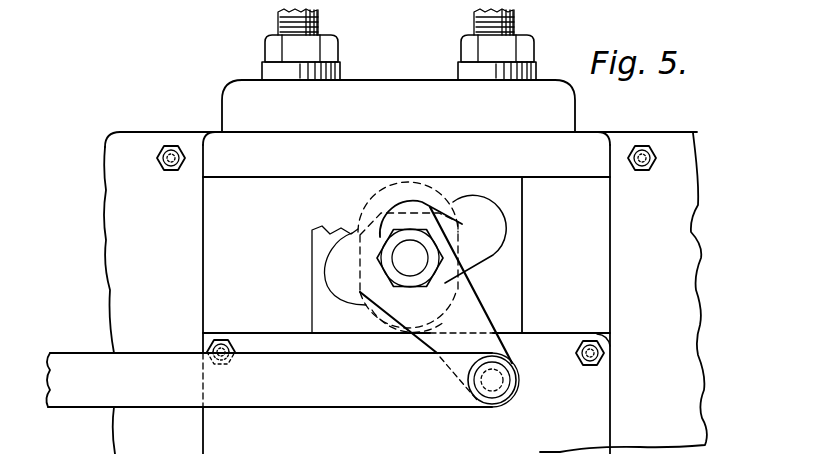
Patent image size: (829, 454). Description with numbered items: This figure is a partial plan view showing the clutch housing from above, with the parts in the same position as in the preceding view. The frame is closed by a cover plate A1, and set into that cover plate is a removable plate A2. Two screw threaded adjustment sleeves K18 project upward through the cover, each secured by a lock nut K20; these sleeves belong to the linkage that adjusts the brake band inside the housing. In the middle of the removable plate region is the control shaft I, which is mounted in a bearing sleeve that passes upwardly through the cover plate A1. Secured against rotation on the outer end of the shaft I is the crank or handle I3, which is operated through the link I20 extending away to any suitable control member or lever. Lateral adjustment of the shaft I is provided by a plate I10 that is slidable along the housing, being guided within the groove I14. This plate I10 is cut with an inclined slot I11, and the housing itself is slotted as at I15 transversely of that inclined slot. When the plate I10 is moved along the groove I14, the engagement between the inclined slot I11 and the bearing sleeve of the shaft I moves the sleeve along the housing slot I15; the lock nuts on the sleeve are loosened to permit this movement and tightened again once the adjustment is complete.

The screw threaded adjustment sleeve K18 is at (493, 30).
The lock nut K20 is at (470, 50).
The cover plate A1 is at (588, 146).
The removable plate A2 is at (600, 394).
The control shaft I is at (403, 259).
The crank or handle I3 is at (477, 317).
The plate I10 is at (518, 200).
The inclined slot I11 is at (507, 227).
The groove I14 is at (273, 333).
The housing slot I15 is at (388, 216).
The link I20 is at (76, 362).